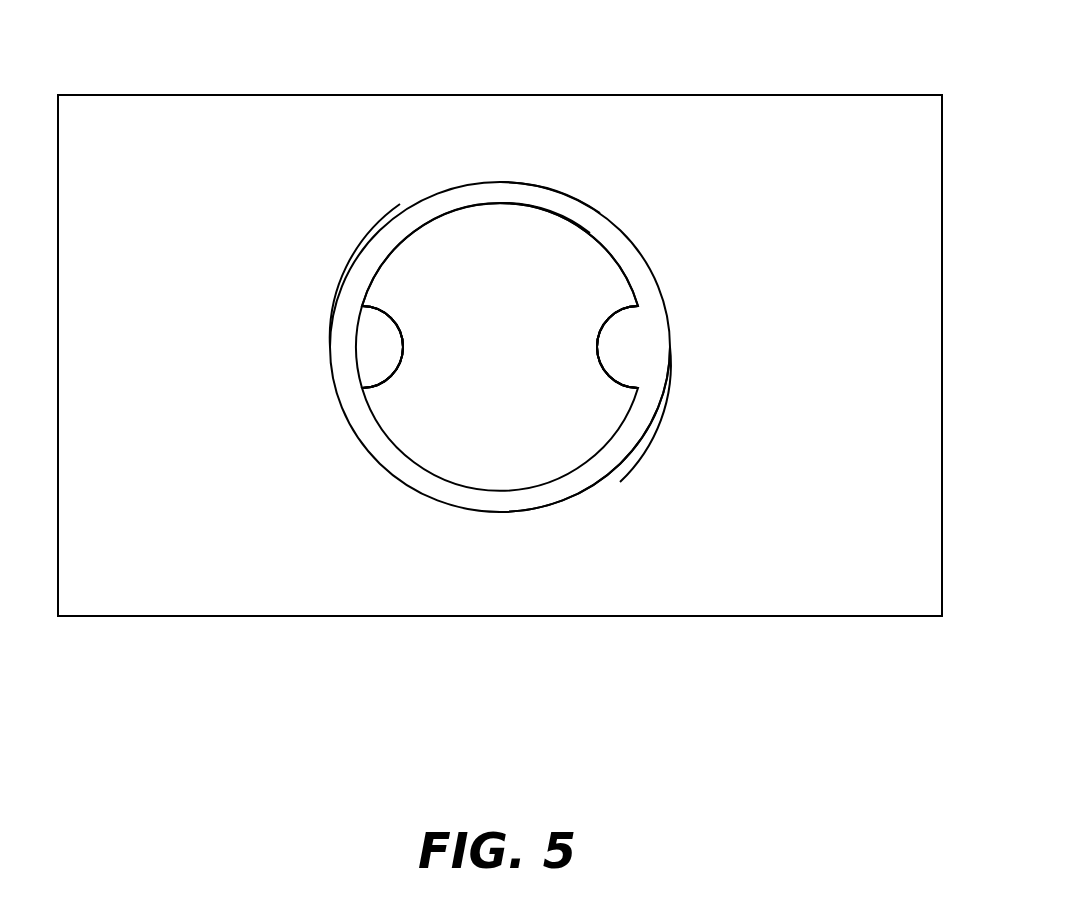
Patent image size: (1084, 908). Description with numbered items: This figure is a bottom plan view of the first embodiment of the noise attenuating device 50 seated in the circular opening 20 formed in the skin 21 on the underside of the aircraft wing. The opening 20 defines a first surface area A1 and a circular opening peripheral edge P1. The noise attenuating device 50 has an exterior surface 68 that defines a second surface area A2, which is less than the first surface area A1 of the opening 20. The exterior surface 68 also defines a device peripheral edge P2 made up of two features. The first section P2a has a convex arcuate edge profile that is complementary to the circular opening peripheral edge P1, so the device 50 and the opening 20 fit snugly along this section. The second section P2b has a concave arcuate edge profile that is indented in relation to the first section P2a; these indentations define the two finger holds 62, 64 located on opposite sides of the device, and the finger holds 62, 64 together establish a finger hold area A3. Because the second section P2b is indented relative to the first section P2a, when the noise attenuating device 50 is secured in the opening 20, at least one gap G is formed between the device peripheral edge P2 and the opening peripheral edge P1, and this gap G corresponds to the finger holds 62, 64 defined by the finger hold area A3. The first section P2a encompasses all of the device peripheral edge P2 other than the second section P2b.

The skin 21 is at (753, 157).
The opening 20 is at (667, 387).
The noise attenuating device 50 is at (448, 220).
The exterior surface 68 is at (445, 435).
The finger hold 62 is at (375, 348).
The finger hold 64 is at (627, 352).
The gap G is at (512, 197).
The first surface area A1 is at (643, 438).
The second surface area A2 is at (370, 282).
The finger hold area A3 is at (498, 347).
The opening peripheral edge P1 is at (603, 478).
The device peripheral edge P2 is at (397, 248).
The first section P2a is at (555, 223).
The second section P2b is at (402, 347).